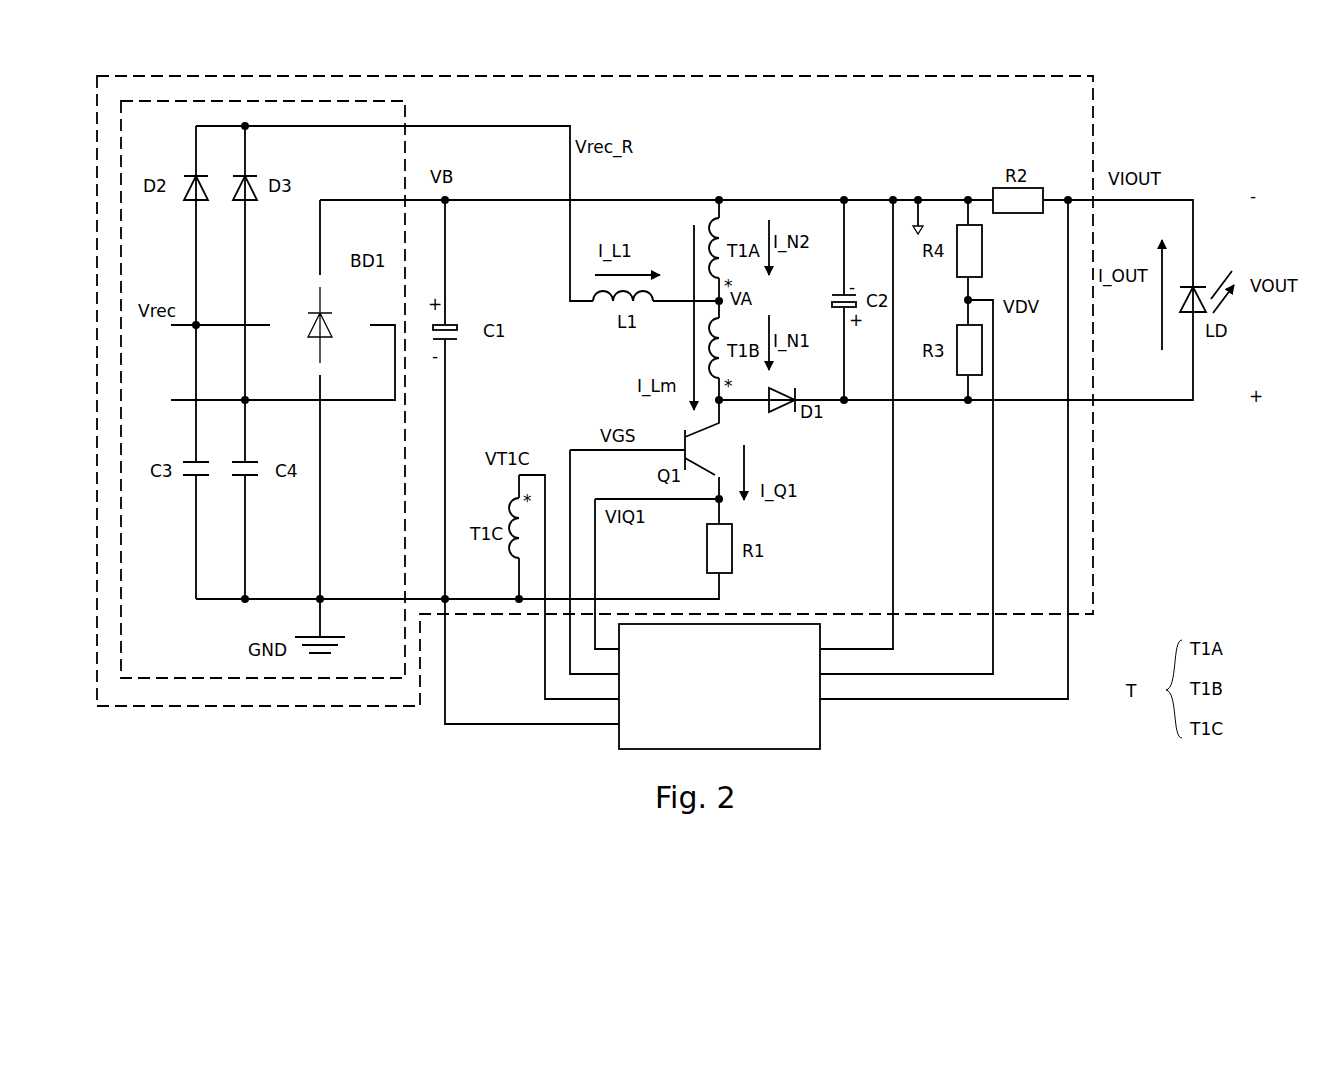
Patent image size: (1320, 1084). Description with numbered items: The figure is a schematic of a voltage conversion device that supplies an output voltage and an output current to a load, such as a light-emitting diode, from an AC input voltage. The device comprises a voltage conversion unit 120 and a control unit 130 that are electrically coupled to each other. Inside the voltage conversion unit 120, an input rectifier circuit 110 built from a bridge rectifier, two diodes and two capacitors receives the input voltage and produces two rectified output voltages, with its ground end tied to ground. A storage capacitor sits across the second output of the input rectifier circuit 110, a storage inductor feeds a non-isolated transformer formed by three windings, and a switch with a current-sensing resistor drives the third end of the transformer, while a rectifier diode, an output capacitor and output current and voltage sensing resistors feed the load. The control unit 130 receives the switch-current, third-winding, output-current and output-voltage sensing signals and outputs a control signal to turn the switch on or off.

The input rectifier circuit 110 is at (218, 679).
The voltage conversion unit 120 is at (694, 76).
The control unit 130 is at (677, 709).